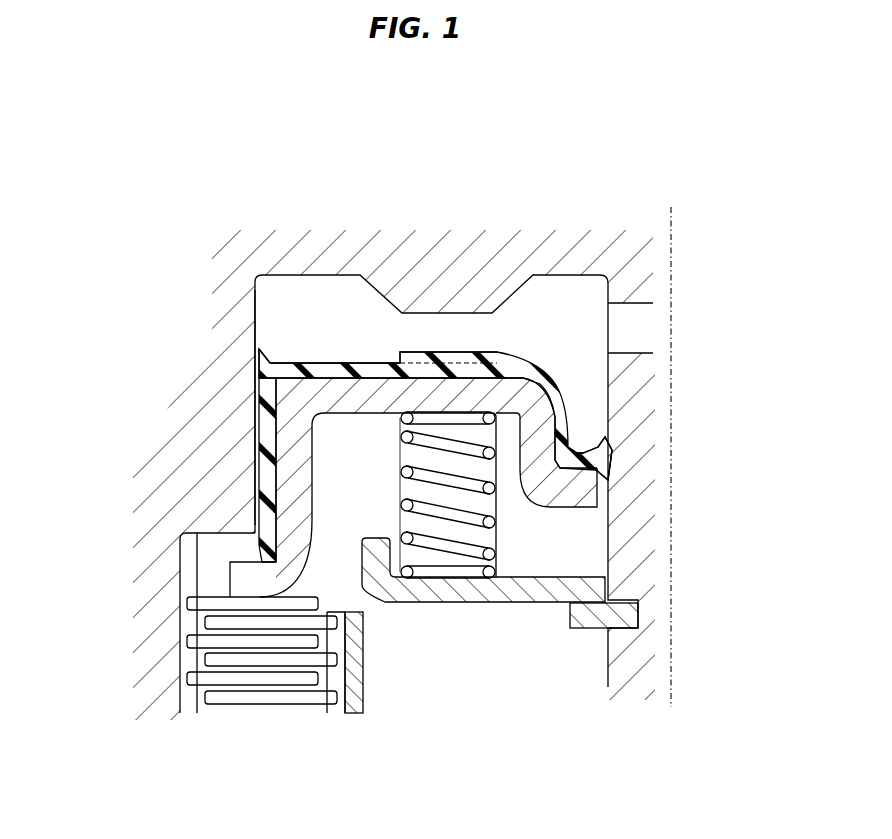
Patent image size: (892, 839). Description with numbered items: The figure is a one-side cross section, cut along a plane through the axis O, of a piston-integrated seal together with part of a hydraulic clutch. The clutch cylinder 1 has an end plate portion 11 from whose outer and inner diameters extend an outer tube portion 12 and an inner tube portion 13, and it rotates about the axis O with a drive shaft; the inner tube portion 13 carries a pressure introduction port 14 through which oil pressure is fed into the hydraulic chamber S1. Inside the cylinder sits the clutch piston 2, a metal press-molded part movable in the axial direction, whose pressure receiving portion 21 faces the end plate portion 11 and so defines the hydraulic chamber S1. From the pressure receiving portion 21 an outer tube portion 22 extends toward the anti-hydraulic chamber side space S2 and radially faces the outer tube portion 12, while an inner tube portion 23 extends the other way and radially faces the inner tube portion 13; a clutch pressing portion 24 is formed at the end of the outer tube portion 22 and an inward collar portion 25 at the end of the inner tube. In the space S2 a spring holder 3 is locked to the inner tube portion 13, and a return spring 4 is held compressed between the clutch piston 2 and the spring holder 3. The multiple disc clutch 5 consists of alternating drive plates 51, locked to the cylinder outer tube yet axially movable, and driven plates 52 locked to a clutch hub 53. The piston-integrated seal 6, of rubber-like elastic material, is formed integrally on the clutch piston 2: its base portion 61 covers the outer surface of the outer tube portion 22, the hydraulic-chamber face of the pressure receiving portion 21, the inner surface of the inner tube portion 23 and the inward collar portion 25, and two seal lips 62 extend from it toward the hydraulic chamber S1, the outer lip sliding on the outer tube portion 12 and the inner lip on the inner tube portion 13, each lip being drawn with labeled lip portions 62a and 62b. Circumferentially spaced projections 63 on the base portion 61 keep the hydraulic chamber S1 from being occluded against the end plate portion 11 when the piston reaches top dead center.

The clutch cylinder 1 is at (463, 245).
The clutch piston 2 is at (409, 385).
The spring holder 3 is at (500, 600).
The return spring 4 is at (396, 503).
The multiple disc clutch 5 is at (256, 691).
The piston-integrated seal 6 is at (430, 376).
The end plate portion 11 is at (436, 443).
The outer tube portion 12 is at (232, 425).
The inner tube portion 13 is at (640, 510).
The pressure introduction port 14 is at (640, 328).
The pressure receiving portion 21 is at (380, 386).
The outer tube portion 22 is at (284, 474).
The inner tube portion 23 is at (563, 435).
The clutch pressing portion 24 is at (242, 578).
The inward collar portion 25 is at (578, 490).
The drive plates 51 is at (187, 680).
The driven plates 52 is at (348, 660).
The clutch hub 53 is at (366, 702).
The base portion 61 is at (322, 356).
The seal lips 62 is at (264, 352).
The first lip 62a is at (256, 364).
The second lip 62b is at (256, 373).
The projections 63 is at (472, 354).
The hydraulic chamber S1 is at (546, 316).
The anti-hydraulic chamber side space S2 is at (538, 699).
The axis O is at (667, 443).